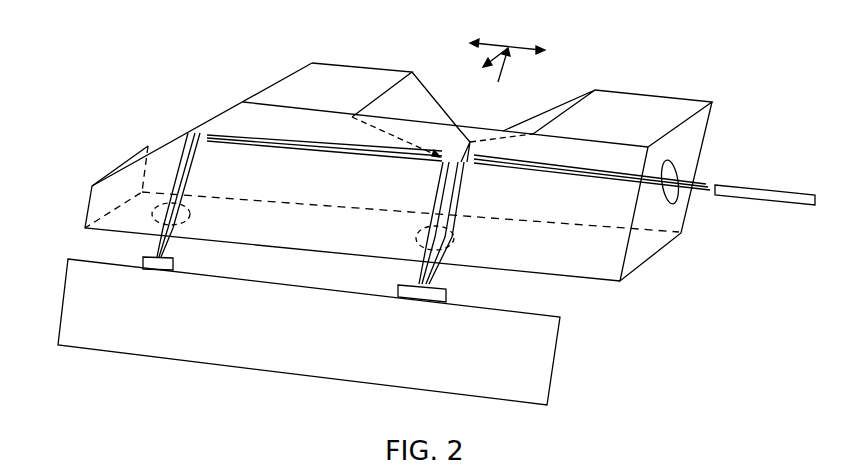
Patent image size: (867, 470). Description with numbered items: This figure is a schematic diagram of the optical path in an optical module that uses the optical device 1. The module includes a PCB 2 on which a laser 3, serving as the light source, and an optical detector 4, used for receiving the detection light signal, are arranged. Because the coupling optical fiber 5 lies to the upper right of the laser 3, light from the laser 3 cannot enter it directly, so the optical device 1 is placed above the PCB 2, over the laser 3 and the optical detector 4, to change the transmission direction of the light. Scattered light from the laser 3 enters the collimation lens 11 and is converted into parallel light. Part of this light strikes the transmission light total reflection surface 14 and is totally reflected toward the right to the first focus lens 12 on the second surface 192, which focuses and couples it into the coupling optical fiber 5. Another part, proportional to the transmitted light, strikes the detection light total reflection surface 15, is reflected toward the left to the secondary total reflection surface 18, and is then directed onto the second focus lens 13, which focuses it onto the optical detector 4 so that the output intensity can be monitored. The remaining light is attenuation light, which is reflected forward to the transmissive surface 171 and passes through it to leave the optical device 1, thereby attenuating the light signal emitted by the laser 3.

The optical device 1 is at (155, 80).
The secondary total reflection surface 18 is at (248, 102).
The detection light total reflection surface 15 is at (425, 100).
The transmission light total reflection surface 14 is at (553, 115).
The second surface 192 is at (693, 143).
The first focus lens 12 is at (681, 176).
The coupling optical fiber 5 is at (757, 200).
The transmissive surface 171 is at (587, 257).
The second focus lens 13 is at (152, 215).
The optical detector 4 is at (142, 260).
The collimation lens 11 is at (453, 247).
The laser 3 is at (446, 295).
The PCB 2 is at (537, 372).